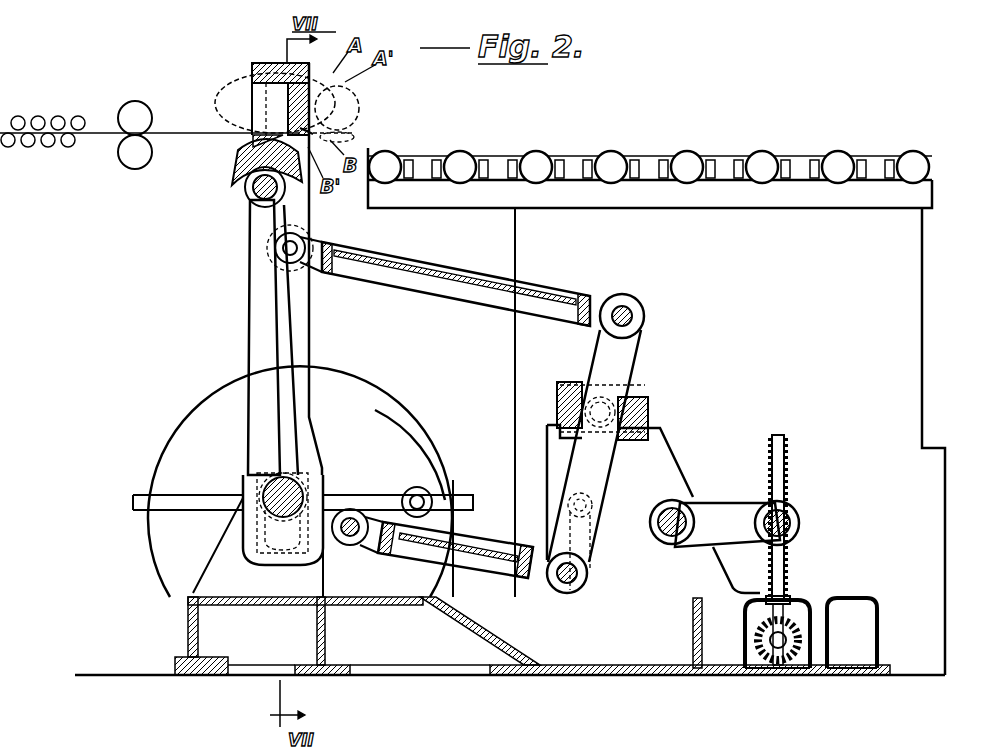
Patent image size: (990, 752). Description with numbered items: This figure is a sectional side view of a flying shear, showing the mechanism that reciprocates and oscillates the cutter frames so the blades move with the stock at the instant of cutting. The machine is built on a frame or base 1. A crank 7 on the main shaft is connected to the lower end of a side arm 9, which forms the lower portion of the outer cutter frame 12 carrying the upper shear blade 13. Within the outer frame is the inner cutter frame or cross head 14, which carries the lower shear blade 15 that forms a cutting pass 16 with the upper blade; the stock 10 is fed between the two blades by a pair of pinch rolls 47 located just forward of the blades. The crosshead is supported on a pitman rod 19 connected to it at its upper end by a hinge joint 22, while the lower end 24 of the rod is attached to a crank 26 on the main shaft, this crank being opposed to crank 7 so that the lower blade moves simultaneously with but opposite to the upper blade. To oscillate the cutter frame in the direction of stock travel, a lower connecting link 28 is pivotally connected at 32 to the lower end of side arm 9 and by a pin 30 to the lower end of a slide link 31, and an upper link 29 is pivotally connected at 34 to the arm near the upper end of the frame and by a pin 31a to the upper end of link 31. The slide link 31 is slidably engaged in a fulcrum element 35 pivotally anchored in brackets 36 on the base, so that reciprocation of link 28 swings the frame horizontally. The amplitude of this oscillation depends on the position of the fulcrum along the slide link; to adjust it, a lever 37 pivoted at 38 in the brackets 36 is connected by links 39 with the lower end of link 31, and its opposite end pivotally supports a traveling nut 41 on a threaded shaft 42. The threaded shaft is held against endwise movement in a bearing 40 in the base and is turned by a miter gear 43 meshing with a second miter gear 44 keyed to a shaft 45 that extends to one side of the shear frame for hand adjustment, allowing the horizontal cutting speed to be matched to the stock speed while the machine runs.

The frame or base 1 is at (188, 612).
The crank 7 is at (262, 566).
The side arm 9 is at (302, 337).
The stock 10 is at (172, 131).
The outer cutter frame 12 is at (268, 63).
The upper shear blade 13 is at (287, 107).
The inner cutter frame or cross head 14 is at (233, 172).
The lower shear blade 15 is at (240, 143).
The cutting pass 16 is at (313, 130).
The pitman rod 19 is at (272, 307).
The hinge joint 22 is at (250, 190).
The lower end of pitman rod 24 is at (262, 485).
The crank 26 is at (300, 490).
The connecting link 28 is at (420, 557).
The upper link 29 is at (540, 292).
The pin 30 is at (572, 587).
The slide link 31 is at (630, 352).
The pin 31a is at (636, 314).
The pivotal connection 32 is at (352, 520).
The pivotal connection 34 is at (310, 242).
The fulcrum element 35 is at (640, 412).
The bracket 36 is at (665, 455).
The lever 37 is at (727, 516).
The pivot 38 is at (675, 508).
The link 39 is at (585, 540).
The bearing 40 is at (783, 598).
The traveling nut 41 is at (790, 518).
The threaded shaft 42 is at (787, 470).
The miter gear 43 is at (818, 600).
The miter gear 44 is at (748, 642).
The shaft 45 is at (760, 672).
The pinch rolls 47 is at (125, 106).